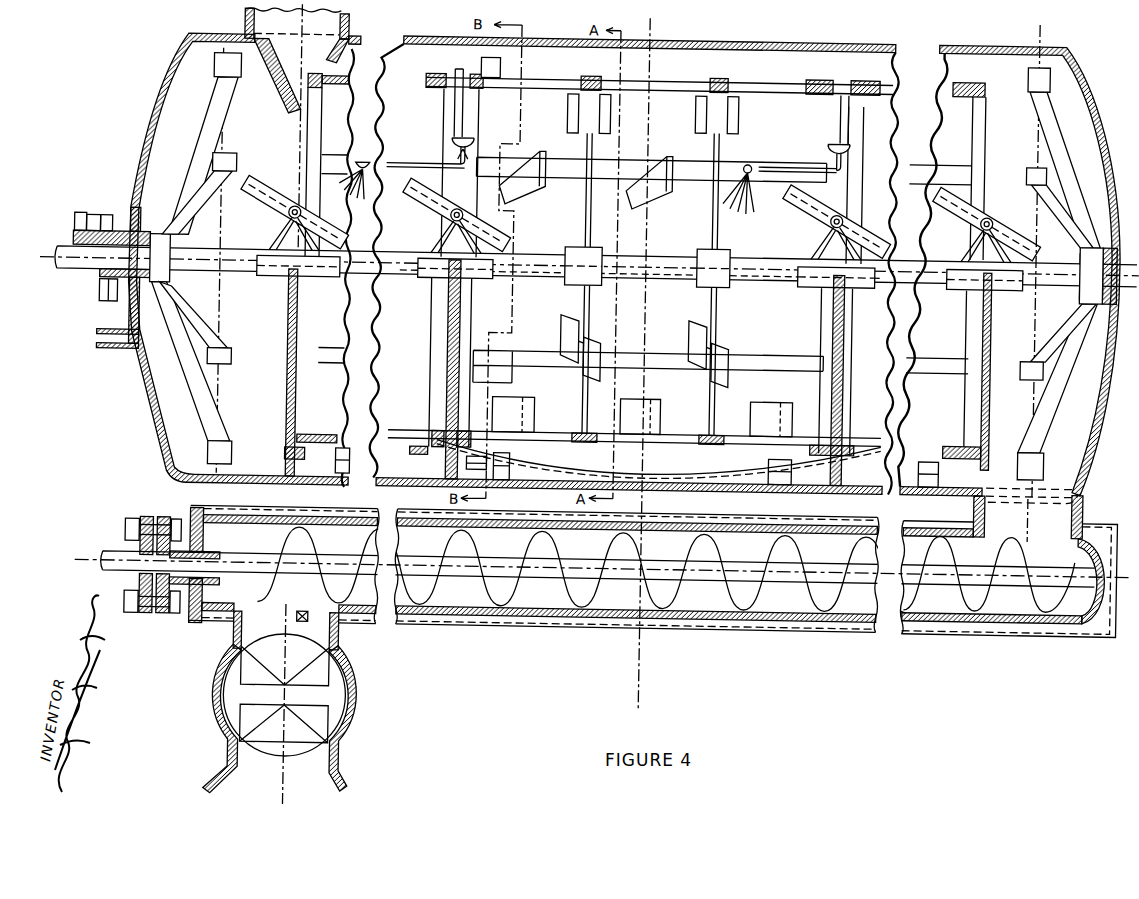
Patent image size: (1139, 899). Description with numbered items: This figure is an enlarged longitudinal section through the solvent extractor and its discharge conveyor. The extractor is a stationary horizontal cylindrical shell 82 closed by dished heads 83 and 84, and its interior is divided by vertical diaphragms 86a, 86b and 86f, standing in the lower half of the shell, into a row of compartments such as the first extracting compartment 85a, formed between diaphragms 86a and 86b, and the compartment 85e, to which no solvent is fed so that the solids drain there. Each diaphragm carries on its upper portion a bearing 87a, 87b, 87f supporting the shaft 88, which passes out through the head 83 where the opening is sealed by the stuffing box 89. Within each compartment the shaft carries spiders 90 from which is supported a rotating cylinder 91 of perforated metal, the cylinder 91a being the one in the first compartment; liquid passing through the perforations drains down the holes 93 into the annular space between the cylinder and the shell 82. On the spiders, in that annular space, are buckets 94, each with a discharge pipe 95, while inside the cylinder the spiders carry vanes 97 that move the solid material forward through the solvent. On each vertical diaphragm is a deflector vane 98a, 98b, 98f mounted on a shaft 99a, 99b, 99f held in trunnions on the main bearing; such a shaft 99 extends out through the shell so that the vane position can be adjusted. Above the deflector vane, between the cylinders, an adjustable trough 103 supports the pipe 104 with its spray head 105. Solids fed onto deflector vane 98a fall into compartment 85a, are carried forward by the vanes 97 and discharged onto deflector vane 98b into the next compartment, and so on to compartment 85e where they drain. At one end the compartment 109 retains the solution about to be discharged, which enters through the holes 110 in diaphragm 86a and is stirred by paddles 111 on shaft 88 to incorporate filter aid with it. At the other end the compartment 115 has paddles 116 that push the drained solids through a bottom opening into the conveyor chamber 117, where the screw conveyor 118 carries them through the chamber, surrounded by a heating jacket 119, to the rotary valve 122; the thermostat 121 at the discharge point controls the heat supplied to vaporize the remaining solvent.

The cylindrical shell 82 is at (682, 33).
The dished head 83 is at (146, 120).
The dished head 84 is at (1098, 128).
The first compartment 85a is at (394, 324).
The compartment 85e is at (946, 337).
The diaphragm 86a is at (290, 403).
The diaphragm 86b is at (449, 400).
The diaphragm 86f is at (984, 399).
The bearing 87a is at (286, 273).
The bearing 87b is at (441, 275).
The bearing 87f is at (1003, 276).
The shaft 88 is at (202, 246).
The stuffing box 89 is at (73, 237).
The spiders 90 is at (597, 236).
The rotating cylinder 91 is at (665, 71).
The rotating cylinder 91a is at (288, 66).
The holes 93 is at (648, 458).
The buckets 94 is at (497, 60).
The discharge pipe 95 is at (476, 54).
The vanes 97 is at (522, 181).
The deflector vane 98a is at (258, 182).
The deflector vane 98b is at (430, 196).
The deflector vane 98f is at (992, 206).
The shaft 99 is at (843, 207).
The shaft 99a is at (303, 206).
The shaft 99b is at (451, 212).
The shaft 99f is at (988, 200).
The trough 103 is at (466, 135).
The pipe 104 is at (398, 157).
The spray head 105 is at (361, 153).
The compartment 109 is at (256, 325).
The holes 110 is at (298, 463).
The paddles 111 is at (221, 119).
The compartment 115 is at (1049, 261).
The paddles 116 is at (1083, 282).
The conveyor chamber 117 is at (997, 552).
The screw conveyor 118 is at (1033, 532).
The heating jacket 119 is at (769, 617).
The thermostat 121 is at (308, 606).
The rotary valve 122 is at (361, 684).